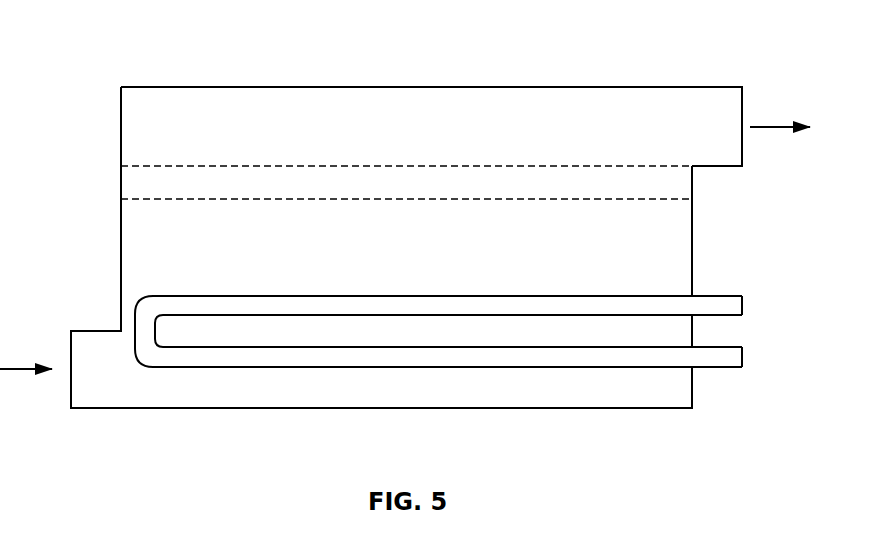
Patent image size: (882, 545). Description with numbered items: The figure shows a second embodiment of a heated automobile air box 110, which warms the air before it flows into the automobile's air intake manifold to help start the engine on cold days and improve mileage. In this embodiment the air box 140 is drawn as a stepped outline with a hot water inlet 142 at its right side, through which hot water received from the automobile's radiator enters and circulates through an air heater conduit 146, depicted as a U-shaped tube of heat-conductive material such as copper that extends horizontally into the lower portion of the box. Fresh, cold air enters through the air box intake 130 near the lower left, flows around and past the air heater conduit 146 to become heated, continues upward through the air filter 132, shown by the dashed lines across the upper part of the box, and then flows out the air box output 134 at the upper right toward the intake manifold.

The heated automobile air box 110 is at (775, 267).
The air box intake 130 is at (57, 349).
The air filter 132 is at (680, 183).
The air box output 134 is at (789, 110).
The air box 140 is at (153, 439).
The hot water inlet 142 is at (748, 352).
The air heater conduit 146 is at (728, 303).